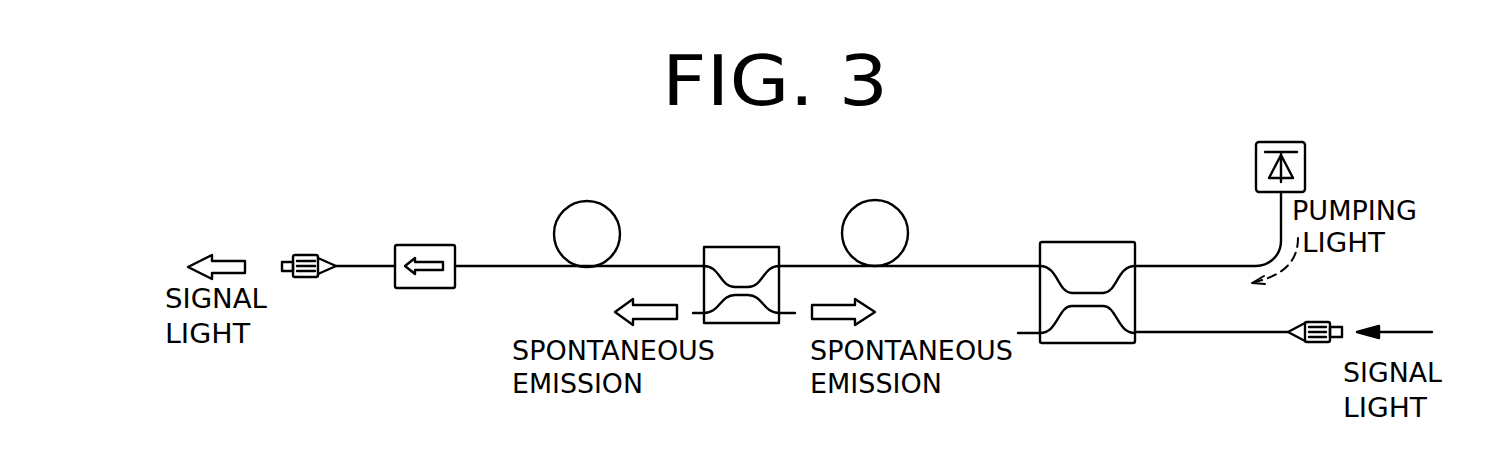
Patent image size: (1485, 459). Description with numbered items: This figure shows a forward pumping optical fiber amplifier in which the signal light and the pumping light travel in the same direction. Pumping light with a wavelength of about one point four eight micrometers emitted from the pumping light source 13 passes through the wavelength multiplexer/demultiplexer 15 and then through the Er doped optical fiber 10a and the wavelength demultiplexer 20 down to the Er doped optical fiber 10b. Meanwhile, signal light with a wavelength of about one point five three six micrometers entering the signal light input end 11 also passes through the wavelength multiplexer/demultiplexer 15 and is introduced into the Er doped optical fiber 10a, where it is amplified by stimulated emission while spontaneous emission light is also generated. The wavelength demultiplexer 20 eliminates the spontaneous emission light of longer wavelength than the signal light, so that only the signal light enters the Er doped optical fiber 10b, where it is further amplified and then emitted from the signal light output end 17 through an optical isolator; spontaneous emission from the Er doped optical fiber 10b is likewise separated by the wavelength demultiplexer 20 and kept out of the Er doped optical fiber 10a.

The signal light output end 17 is at (306, 254).
The Er doped optical fiber 10b is at (585, 201).
The wavelength demultiplexer 20 is at (735, 247).
The Er doped optical fiber 10a is at (877, 200).
The wavelength multiplexer/demultiplexer 15 is at (1083, 242).
The pumping light source 13 is at (1280, 142).
The signal light input end 11 is at (1300, 344).